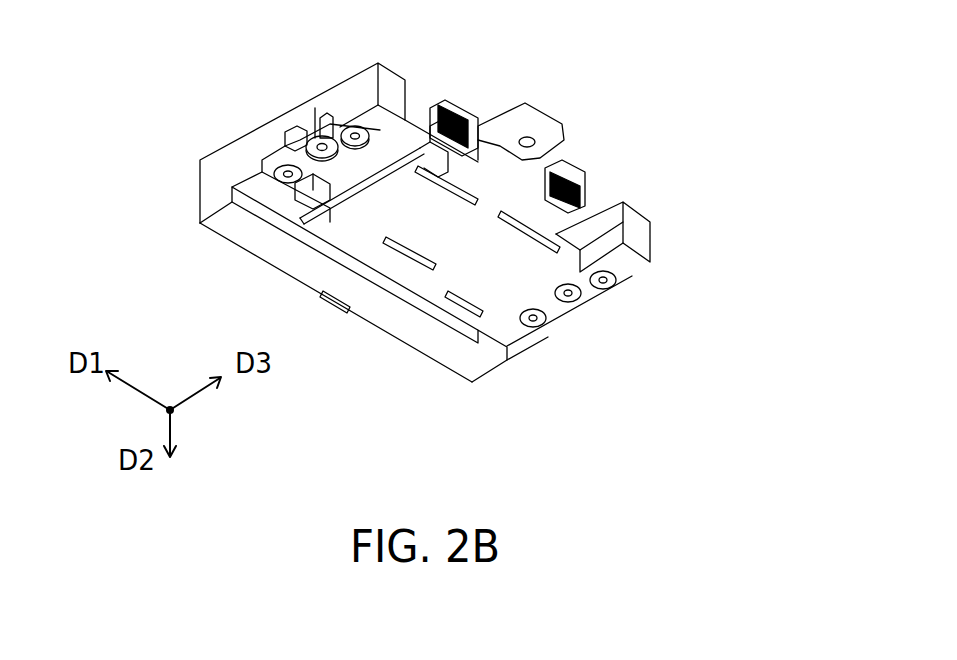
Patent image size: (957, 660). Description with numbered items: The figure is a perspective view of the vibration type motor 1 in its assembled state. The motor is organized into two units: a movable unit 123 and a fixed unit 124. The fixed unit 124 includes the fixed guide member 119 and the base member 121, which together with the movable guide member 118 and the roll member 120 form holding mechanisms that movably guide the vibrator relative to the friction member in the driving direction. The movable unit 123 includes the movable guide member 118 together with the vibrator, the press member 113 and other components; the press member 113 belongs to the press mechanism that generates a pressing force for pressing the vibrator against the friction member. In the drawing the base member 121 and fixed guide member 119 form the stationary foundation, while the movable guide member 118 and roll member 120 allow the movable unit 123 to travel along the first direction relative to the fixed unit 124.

The vibration type motor 1 is at (163, 102).
The press member 113 is at (462, 120).
The movable guide member 118 is at (360, 211).
The fixed guide member 119 is at (333, 172).
The roll member 120 is at (437, 190).
The base member 121 is at (633, 225).
The movable unit 123 is at (533, 84).
The fixed unit 124 is at (297, 78).